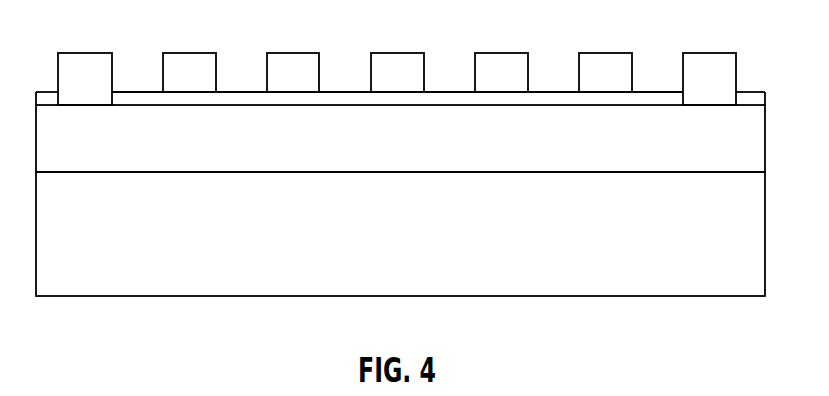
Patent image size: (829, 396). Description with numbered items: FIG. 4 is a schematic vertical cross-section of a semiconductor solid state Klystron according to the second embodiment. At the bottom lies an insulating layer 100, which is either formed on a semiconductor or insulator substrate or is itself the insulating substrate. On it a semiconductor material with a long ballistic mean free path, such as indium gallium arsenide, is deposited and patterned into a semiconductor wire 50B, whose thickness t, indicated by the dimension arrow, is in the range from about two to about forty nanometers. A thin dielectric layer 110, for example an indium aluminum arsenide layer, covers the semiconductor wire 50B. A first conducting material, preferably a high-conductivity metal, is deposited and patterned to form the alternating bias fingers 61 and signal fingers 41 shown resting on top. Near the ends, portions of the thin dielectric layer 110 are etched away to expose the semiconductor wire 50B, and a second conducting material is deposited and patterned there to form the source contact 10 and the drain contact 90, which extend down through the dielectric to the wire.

The insulating layer 100 is at (378, 248).
The semiconductor wire 50B is at (378, 152).
The thin dielectric layer 110 is at (145, 97).
The drain contact 90 is at (98, 85).
The signal fingers 41 is at (177, 85).
The bias fingers 61 is at (280, 85).
The source contact 10 is at (697, 85).
The thickness of the semiconductor wire t is at (492, 115).